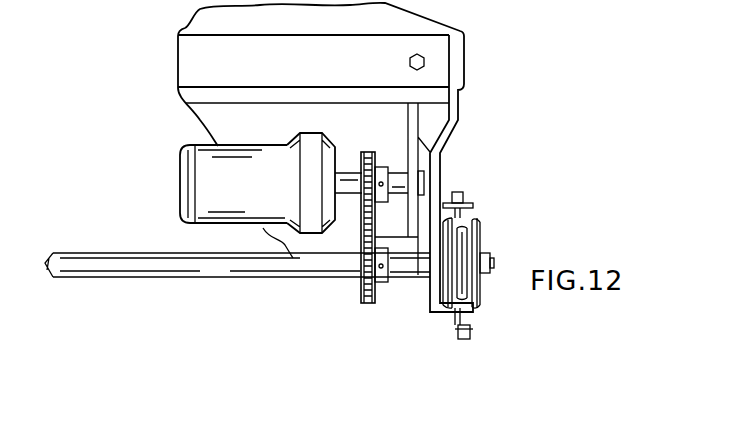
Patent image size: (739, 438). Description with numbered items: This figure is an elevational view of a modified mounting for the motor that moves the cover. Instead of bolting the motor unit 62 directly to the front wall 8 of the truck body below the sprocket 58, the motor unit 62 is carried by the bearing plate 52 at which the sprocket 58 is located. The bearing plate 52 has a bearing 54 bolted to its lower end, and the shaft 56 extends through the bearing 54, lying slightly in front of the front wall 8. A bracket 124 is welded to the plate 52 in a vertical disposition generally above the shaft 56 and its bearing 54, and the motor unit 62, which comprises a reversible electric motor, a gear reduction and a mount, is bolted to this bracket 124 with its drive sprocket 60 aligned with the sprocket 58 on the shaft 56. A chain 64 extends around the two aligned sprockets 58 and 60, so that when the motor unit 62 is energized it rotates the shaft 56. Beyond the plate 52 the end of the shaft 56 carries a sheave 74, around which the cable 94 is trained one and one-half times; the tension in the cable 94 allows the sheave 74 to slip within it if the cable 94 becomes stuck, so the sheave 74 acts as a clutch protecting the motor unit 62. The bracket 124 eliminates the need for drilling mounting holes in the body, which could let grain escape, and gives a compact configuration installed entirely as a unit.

The front wall 8 is at (218, 113).
The bracket 124 is at (390, 152).
The bearing plate 52 is at (437, 172).
The motor unit 62 is at (213, 170).
The sprocket 60 is at (363, 209).
The sprocket 58 is at (362, 288).
The shaft 56 is at (128, 274).
The bearing 54 is at (413, 277).
The chain 64 is at (357, 240).
The cable 94 is at (470, 240).
The sheave 74 is at (480, 300).